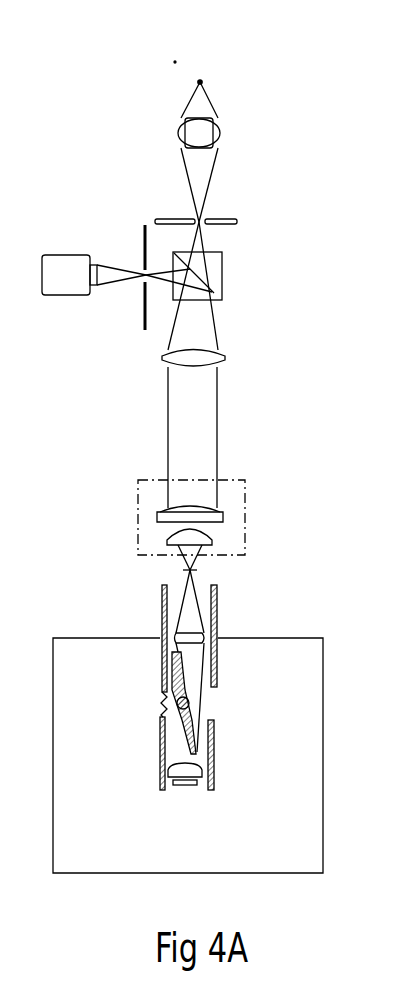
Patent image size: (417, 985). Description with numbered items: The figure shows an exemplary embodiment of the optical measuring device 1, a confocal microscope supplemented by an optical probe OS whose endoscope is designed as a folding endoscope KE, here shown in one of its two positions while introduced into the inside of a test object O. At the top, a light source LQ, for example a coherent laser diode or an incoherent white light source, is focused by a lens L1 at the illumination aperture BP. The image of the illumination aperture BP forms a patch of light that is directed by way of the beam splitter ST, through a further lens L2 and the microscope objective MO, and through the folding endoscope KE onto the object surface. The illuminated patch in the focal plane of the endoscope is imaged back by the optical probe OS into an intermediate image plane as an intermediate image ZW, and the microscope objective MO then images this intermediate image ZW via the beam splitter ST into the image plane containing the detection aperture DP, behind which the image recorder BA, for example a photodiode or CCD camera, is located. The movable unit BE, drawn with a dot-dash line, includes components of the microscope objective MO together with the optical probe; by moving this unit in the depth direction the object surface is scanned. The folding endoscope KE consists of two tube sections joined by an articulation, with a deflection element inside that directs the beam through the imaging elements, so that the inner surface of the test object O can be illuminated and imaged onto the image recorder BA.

The light source LQ is at (202, 82).
The lens L1 is at (221, 132).
The illumination aperture BP is at (238, 220).
The detection aperture DP is at (143, 230).
The image recorder BA is at (90, 293).
The beam splitter ST is at (222, 276).
The lens L2 is at (226, 356).
The movable unit BE is at (247, 478).
The microscope objective MO is at (224, 515).
The intermediate image ZW is at (200, 569).
The optical measuring device 1 is at (108, 503).
The optical probe OS is at (130, 593).
The folding endoscope KE is at (220, 604).
The test object O is at (327, 730).